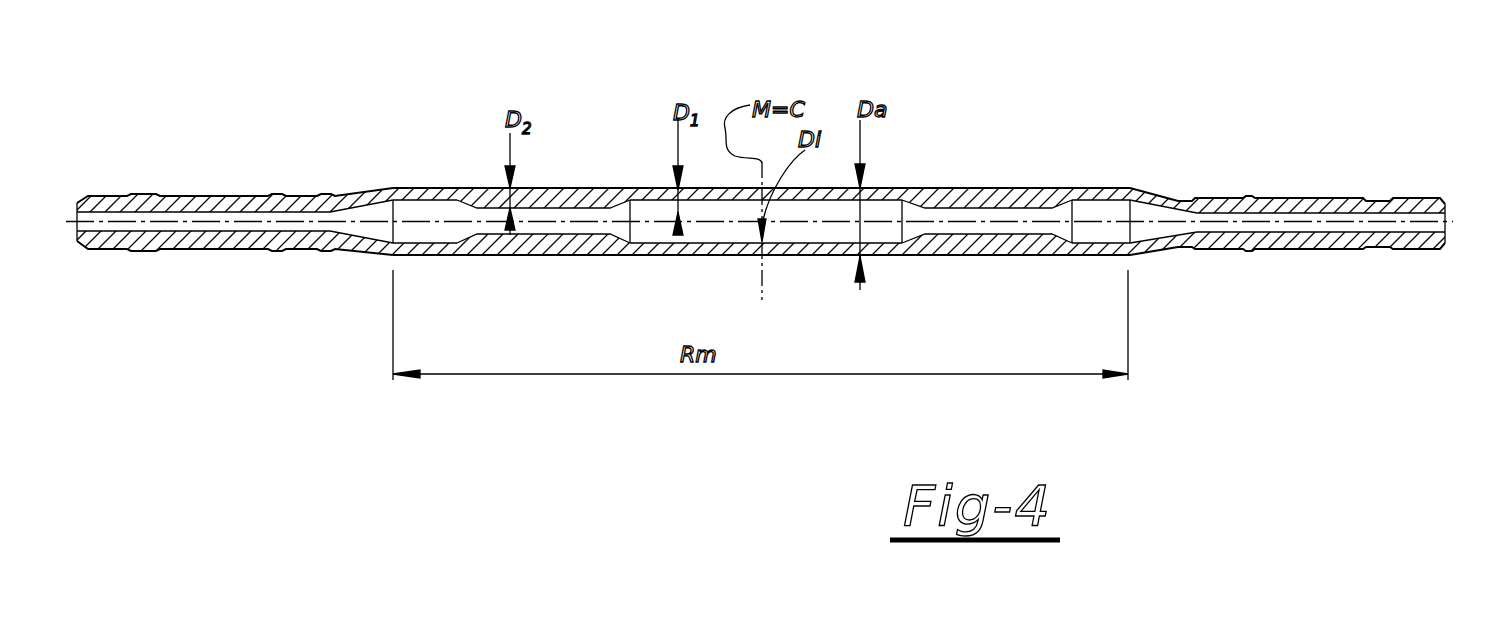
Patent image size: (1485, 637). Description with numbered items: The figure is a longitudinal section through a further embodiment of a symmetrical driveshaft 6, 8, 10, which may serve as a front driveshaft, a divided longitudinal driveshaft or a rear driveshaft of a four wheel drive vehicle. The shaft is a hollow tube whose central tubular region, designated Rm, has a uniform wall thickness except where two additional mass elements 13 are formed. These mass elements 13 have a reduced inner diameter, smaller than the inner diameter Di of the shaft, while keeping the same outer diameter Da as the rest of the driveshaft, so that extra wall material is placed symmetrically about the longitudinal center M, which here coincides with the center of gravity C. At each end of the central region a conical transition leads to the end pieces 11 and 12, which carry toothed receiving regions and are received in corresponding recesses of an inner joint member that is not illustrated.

The front driveshaft 6 is at (742, 157).
The divided longitudinal driveshaft 8 is at (742, 157).
The rear driveshaft 10 is at (1160, 164).
The end piece 11 is at (229, 196).
The end piece 12 is at (1302, 198).
The additional mass element 13 is at (565, 196).